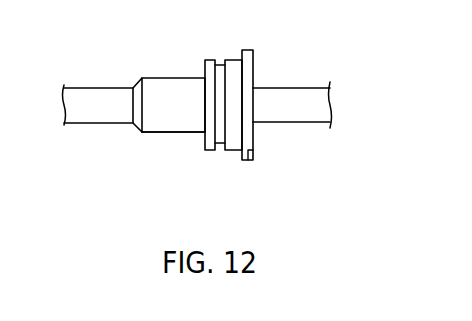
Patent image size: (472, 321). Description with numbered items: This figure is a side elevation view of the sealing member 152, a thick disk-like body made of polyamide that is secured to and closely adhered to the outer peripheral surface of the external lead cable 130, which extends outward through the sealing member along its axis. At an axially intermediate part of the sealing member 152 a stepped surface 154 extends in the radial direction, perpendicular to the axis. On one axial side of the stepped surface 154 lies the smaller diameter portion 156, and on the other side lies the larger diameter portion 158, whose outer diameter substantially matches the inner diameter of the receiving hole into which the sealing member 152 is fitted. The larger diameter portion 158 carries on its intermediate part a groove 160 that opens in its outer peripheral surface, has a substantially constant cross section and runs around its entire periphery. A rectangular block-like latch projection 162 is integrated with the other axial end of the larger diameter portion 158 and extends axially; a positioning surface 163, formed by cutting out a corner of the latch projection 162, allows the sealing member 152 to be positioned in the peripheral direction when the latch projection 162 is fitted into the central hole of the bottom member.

The external lead cable 130 is at (90, 110).
The sealing member 152 is at (257, 45).
The stepped surface 154 is at (204, 124).
The smaller diameter portion 156 is at (160, 85).
The larger diameter portion 158 is at (233, 140).
The groove 160 is at (222, 60).
The latch projection 162 is at (249, 132).
The positioning surface 163 is at (252, 161).